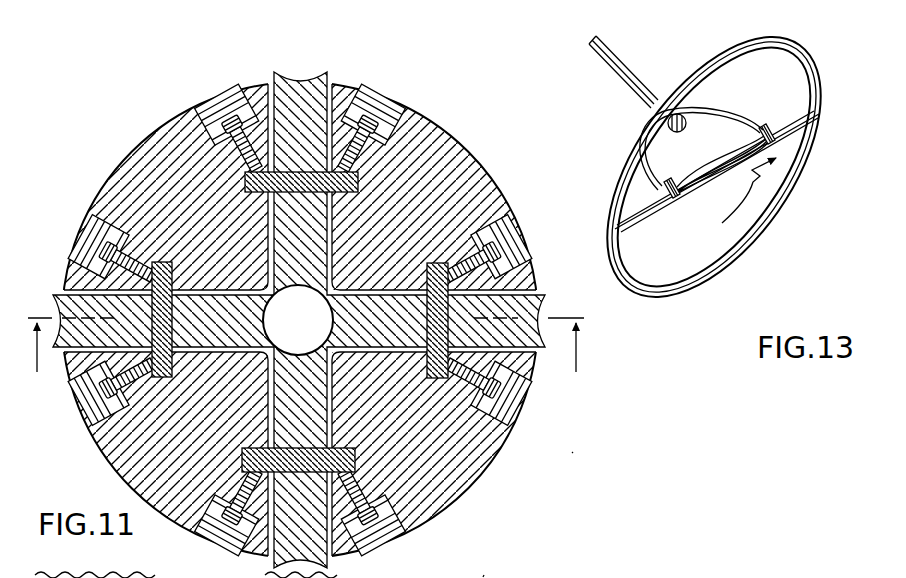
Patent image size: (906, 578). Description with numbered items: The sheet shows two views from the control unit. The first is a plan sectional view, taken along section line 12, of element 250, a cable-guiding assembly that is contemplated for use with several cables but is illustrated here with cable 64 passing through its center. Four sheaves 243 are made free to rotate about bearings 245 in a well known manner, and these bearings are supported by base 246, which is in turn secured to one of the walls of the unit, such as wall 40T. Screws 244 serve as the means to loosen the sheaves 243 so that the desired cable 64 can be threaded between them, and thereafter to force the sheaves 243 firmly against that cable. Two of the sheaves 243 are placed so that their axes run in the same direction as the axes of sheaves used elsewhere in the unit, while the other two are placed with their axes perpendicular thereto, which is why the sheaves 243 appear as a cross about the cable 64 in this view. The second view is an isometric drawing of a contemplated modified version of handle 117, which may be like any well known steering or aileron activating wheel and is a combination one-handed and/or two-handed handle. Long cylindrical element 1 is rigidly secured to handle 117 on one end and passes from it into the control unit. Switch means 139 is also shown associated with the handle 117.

In FIG. 11, the sheaves 243 is at (299, 78).
In FIG. 11, the screws 244 is at (232, 118).
In FIG. 11, the bearings 245 is at (176, 274).
In FIG. 11, the base 246 is at (135, 145).
In FIG. 11, the cable 64 is at (298, 320).
In FIG. 11, the section line 12 is at (309, 345).
In FIG. 11, the wall 40T is at (484, 576).
In FIG. 11, the element 250 is at (574, 454).
In FIG. 13, the long cylindrical element 1 is at (614, 40).
In FIG. 13, the switch means 139 is at (663, 205).
In FIG. 13, the handle 117 is at (795, 218).